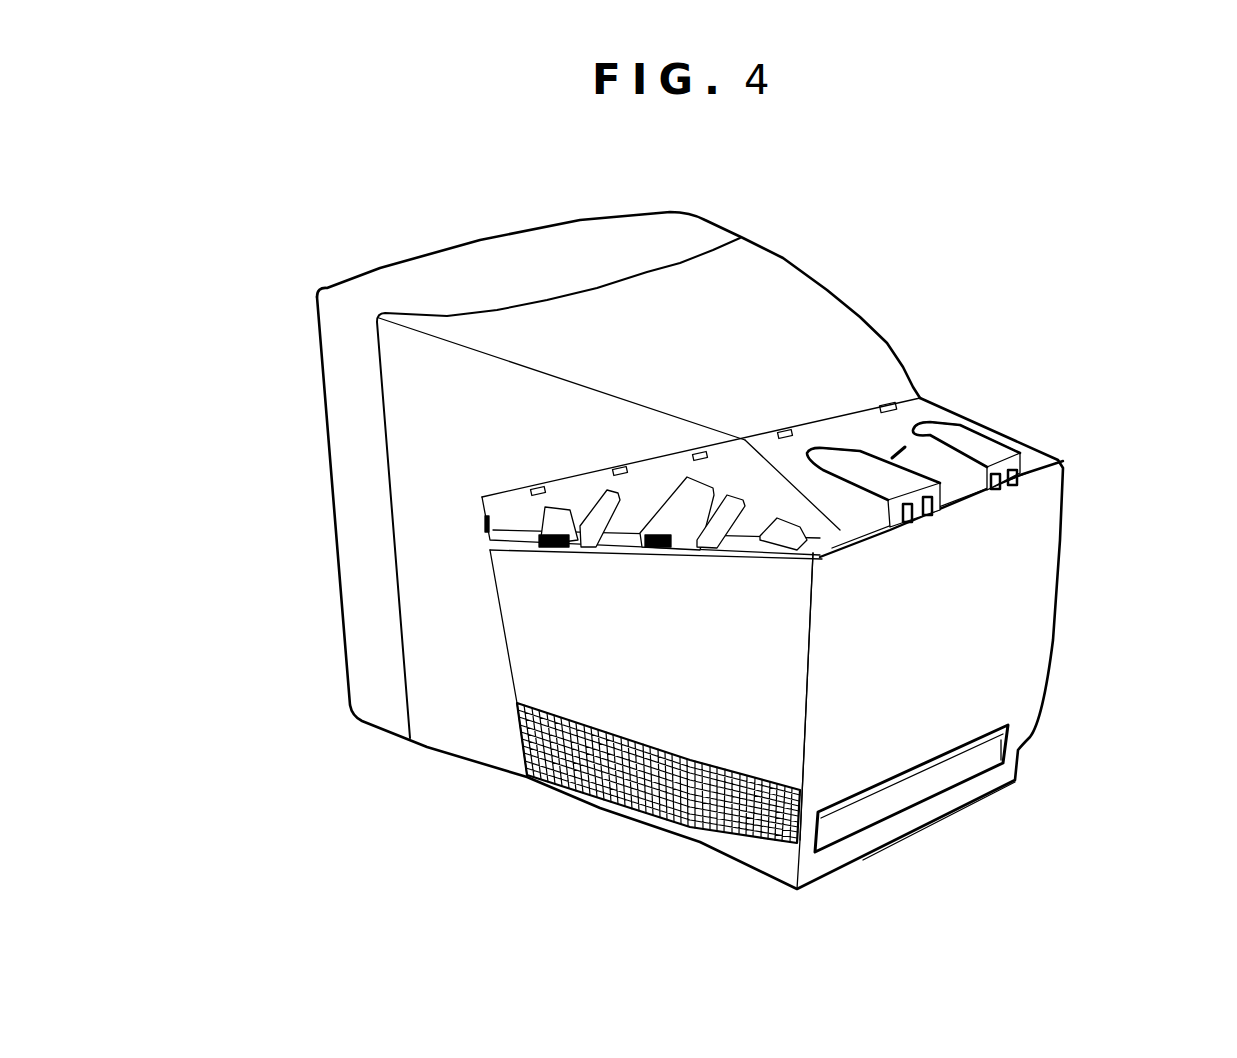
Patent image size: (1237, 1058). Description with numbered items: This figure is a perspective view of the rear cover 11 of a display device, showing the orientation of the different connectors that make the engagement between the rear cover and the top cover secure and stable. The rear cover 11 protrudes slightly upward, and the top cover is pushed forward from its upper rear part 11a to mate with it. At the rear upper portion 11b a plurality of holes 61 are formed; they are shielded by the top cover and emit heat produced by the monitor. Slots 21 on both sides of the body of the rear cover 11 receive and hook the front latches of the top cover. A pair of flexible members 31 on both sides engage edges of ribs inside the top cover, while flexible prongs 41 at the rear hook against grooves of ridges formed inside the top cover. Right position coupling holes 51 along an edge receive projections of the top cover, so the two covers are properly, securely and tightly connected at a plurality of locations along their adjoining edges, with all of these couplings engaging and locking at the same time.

The rear cover 11 is at (762, 223).
The upper rear part of rear cover 11a is at (910, 445).
The rear upper portion of rear cover 11b is at (900, 392).
The slots 21 is at (487, 530).
The flexible members 31 is at (657, 560).
The flexible prongs 41 is at (940, 518).
The right position coupling holes 51 is at (540, 488).
The holes 61 is at (565, 533).